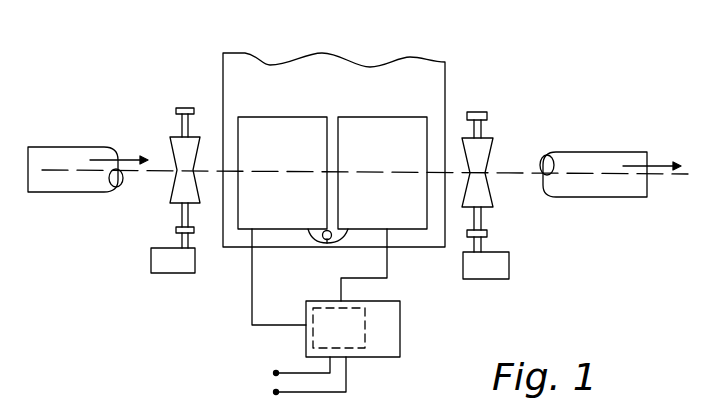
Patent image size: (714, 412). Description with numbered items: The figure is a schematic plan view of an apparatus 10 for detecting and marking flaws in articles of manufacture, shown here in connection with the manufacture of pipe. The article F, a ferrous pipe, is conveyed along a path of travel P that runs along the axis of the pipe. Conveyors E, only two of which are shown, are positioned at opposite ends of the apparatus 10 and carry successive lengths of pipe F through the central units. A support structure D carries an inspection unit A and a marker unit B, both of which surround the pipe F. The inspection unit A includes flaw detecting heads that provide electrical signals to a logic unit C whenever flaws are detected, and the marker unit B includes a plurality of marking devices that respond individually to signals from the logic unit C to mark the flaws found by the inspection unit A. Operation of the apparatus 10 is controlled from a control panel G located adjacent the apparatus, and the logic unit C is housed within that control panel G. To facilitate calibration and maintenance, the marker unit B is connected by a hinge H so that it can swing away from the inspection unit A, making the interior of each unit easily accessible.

The apparatus 10 is at (184, 100).
The article of manufacture F is at (82, 203).
The path of travel P is at (508, 172).
The conveyor E is at (329, 173).
The support structure D is at (455, 80).
The inspection unit A is at (282, 173).
The marker unit B is at (382, 173).
The hinge H is at (323, 245).
The logic unit C is at (339, 328).
The control panel G is at (377, 329).